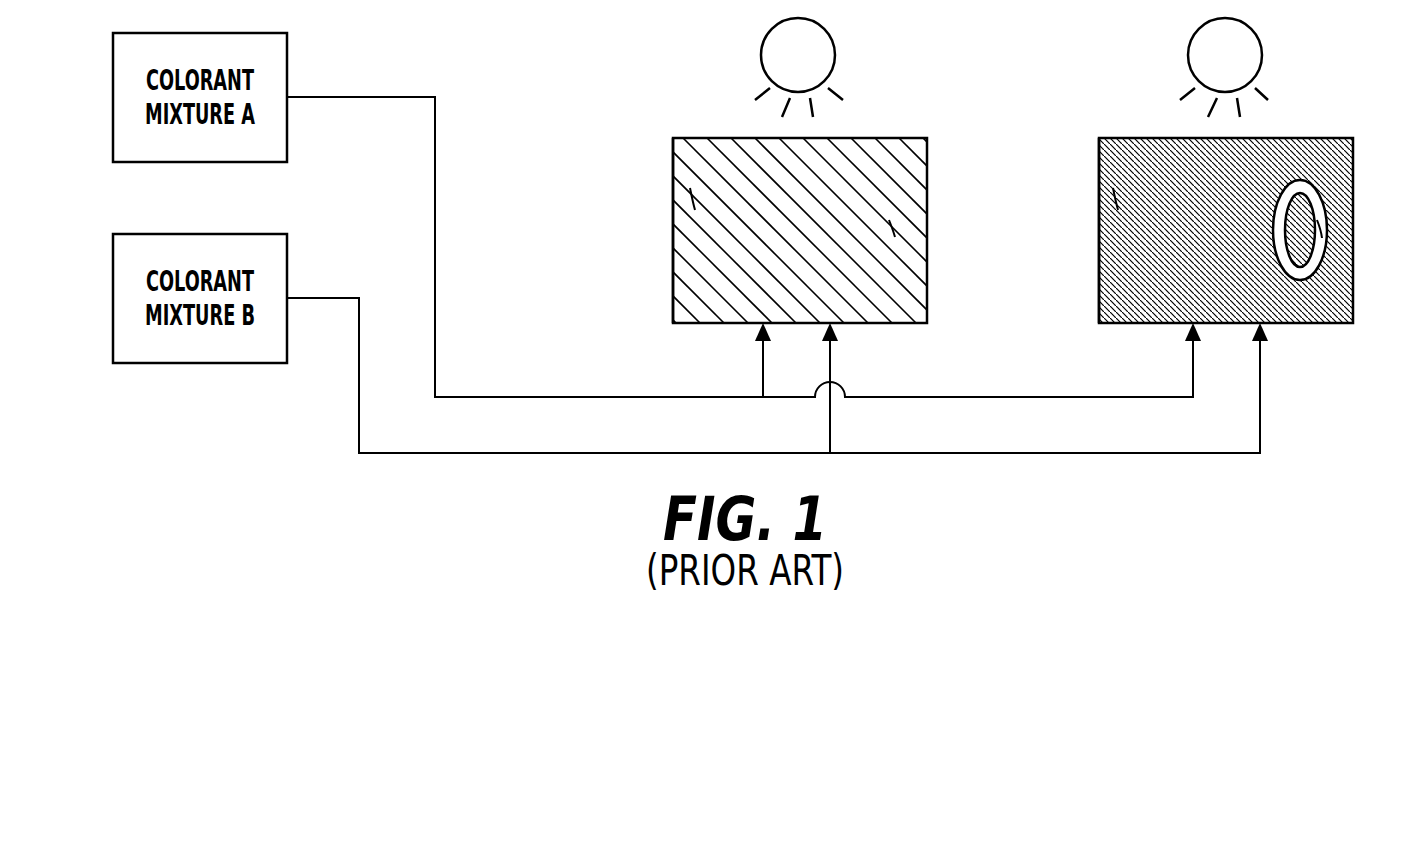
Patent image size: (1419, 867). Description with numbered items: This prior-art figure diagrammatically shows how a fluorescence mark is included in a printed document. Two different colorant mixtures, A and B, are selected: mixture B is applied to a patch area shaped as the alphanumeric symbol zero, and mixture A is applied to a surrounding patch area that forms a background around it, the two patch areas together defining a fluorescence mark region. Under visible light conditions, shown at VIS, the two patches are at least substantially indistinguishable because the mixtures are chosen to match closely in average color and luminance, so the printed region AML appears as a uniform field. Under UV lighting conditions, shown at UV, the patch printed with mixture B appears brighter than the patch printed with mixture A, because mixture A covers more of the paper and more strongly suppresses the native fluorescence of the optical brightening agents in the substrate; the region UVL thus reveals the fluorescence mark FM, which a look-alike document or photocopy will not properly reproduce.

The visible light conditions VIS is at (718, 108).
The article viewed under ambient light AML is at (882, 130).
The UV lighting conditions UV is at (1149, 108).
The article viewed under ultraviolet light UVL is at (1305, 130).
The fluorescence mark FM is at (1315, 267).